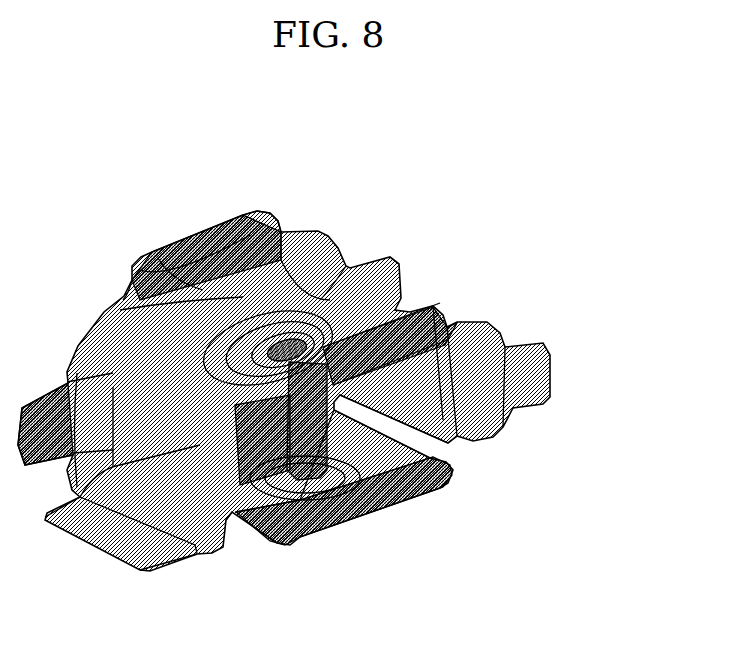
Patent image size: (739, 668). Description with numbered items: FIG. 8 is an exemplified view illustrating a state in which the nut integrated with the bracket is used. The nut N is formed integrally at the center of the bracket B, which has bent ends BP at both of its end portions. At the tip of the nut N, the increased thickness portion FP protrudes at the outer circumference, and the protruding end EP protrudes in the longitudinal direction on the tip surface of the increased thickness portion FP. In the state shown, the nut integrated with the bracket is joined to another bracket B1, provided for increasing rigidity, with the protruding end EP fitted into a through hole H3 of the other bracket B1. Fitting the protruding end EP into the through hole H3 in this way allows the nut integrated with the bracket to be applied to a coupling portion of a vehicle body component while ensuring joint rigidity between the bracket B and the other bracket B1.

The through hole H3 is at (158, 258).
The another bracket B1 is at (283, 213).
The protruding end EP is at (317, 348).
The increased thickness portion FP is at (353, 393).
The bracket B is at (430, 490).
The bent end BP is at (347, 527).
The nut N is at (273, 452).